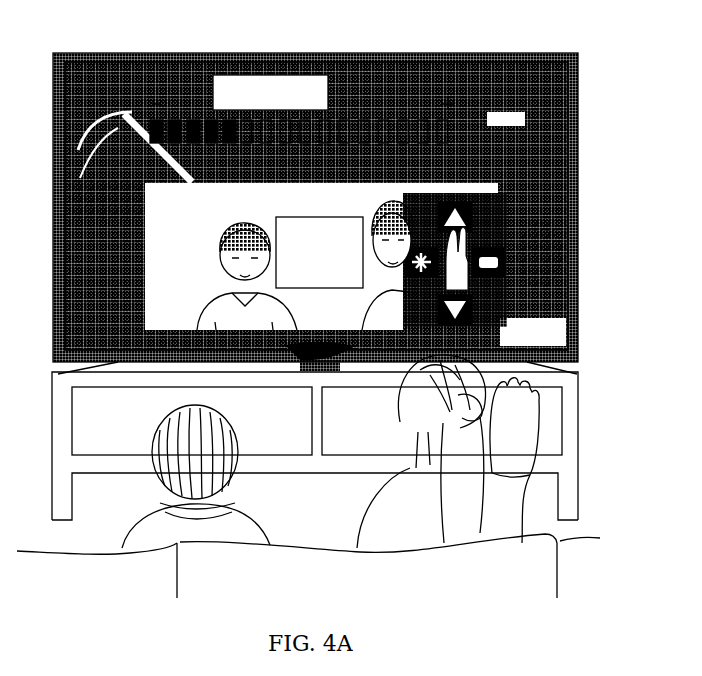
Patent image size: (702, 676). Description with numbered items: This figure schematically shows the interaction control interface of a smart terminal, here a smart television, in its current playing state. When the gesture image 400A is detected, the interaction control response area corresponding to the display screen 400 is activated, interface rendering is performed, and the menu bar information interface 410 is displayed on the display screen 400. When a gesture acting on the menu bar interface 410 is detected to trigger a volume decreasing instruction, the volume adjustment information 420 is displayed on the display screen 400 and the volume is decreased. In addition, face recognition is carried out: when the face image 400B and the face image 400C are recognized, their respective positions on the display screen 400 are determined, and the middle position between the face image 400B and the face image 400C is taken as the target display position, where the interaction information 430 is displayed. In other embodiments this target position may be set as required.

The display screen 400 is at (480, 55).
The volume adjustment information 420 is at (332, 110).
The interaction information 430 is at (330, 216).
The face image 400C is at (285, 202).
The face image 400B is at (398, 206).
The menu bar information interface 410 is at (494, 225).
The gesture image 400A is at (470, 282).